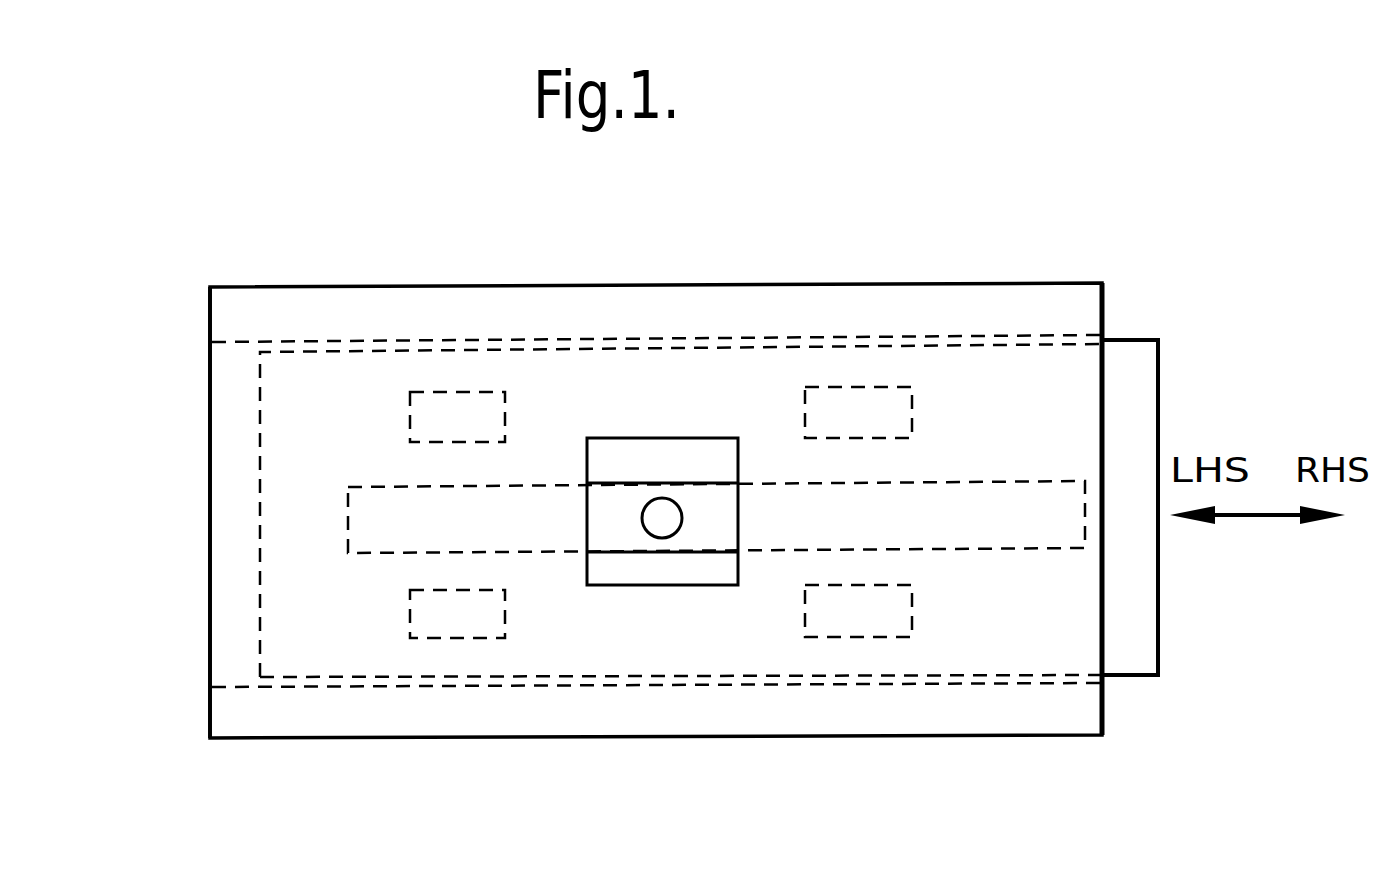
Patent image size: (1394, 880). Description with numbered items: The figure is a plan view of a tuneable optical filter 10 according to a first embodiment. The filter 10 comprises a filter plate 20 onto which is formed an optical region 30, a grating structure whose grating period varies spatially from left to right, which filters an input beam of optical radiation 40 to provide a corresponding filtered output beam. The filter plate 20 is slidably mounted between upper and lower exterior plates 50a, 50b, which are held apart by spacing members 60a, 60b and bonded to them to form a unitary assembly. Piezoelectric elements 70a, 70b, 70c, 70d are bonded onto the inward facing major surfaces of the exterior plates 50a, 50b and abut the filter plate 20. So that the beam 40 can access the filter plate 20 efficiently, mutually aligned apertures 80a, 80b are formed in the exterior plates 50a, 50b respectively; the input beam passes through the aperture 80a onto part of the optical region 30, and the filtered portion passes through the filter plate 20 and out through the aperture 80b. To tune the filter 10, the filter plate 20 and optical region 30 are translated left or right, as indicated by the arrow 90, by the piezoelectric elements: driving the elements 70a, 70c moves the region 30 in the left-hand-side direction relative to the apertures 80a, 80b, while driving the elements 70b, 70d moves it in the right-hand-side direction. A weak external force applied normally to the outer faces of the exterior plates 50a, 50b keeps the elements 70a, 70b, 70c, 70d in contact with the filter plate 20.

The tuneable optical filter 10 is at (1145, 176).
The filter plate 20 is at (1142, 387).
The optical region 30 is at (912, 530).
The beam of optical radiation 40 is at (660, 525).
The upper exterior plate 50a is at (232, 496).
The lower exterior plate 50b is at (131, 512).
The spacing member 60a is at (305, 312).
The spacing member 60b is at (305, 713).
The piezoelectric element 70a is at (438, 410).
The piezoelectric element 70b is at (855, 410).
The piezoelectric element 70c is at (443, 617).
The piezoelectric element 70d is at (858, 617).
The aperture 80a is at (684, 367).
The aperture 80b is at (683, 435).
The arrow 90 is at (1237, 517).